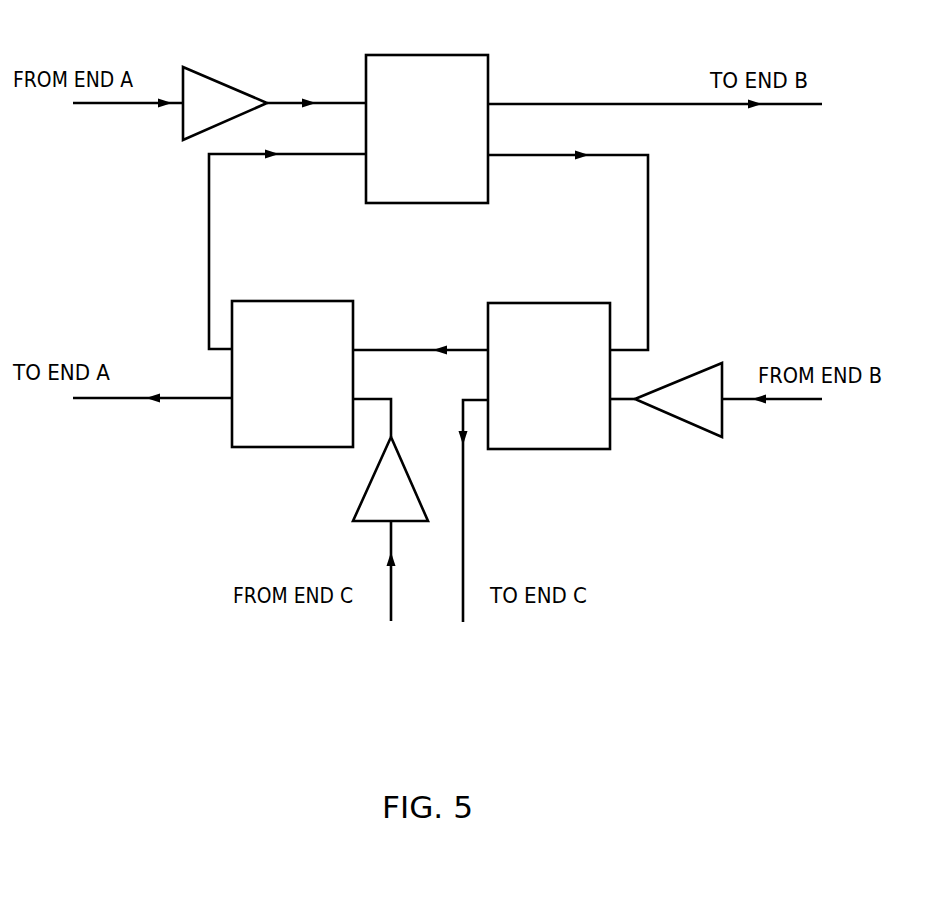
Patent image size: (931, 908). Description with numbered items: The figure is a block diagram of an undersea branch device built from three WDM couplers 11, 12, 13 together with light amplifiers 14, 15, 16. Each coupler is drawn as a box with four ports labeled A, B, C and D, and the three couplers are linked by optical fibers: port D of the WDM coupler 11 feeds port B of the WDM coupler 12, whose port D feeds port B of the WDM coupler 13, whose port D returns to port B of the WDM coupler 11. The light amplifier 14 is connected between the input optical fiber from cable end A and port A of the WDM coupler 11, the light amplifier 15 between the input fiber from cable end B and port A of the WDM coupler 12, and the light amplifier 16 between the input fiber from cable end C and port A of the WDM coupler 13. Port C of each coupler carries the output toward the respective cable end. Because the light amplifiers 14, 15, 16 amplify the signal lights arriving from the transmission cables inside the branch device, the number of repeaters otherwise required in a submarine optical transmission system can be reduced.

The WDM coupler 11 is at (417, 55).
The WDM coupler 12 is at (538, 303).
The WDM coupler 13 is at (275, 301).
The light amplifier 14 is at (213, 73).
The light amplifier 15 is at (685, 378).
The light amplifier 16 is at (360, 498).